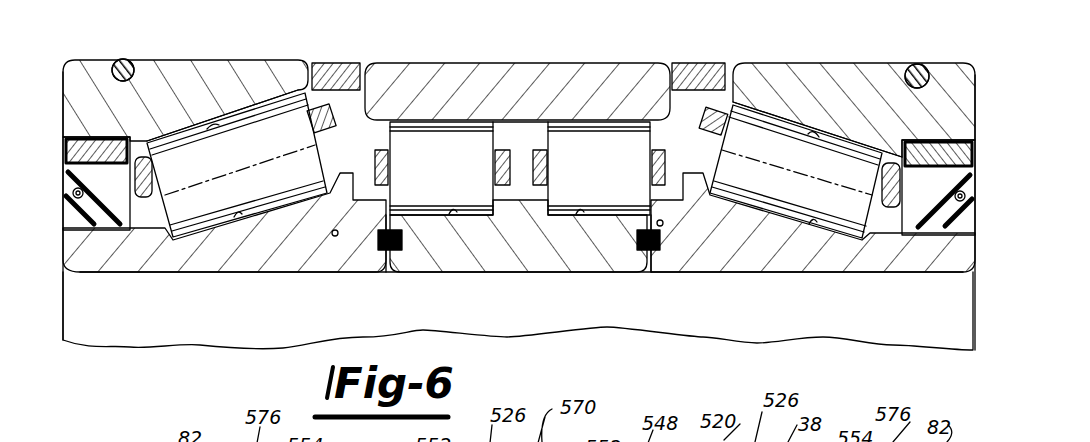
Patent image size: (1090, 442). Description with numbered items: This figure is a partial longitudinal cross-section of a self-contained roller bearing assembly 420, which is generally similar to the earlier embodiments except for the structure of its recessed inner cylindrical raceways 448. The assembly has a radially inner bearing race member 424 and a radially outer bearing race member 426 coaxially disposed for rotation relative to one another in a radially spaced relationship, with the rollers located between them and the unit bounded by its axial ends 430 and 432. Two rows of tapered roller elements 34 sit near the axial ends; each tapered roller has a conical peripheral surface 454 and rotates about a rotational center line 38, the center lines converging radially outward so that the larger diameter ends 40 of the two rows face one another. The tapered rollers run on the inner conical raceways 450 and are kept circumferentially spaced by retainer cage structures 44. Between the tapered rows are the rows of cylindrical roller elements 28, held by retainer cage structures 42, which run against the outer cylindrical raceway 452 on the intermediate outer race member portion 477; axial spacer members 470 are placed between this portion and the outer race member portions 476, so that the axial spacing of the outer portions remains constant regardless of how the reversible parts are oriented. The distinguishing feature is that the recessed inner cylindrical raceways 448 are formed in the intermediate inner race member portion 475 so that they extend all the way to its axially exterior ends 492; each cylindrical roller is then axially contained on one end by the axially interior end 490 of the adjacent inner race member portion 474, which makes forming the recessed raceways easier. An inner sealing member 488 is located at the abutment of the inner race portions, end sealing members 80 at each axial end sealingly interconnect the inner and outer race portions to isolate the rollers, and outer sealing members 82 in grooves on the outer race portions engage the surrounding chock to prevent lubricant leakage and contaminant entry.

The cylindrical roller elements 28 is at (442, 143).
The tapered roller elements 34 is at (283, 77).
The rotational center lines 38 is at (173, 186).
The larger diameter ends 40 is at (340, 138).
The retainer cage structure 42 is at (653, 143).
The retainer cage structure 44 is at (147, 197).
The end sealing members 80 is at (90, 215).
The outer sealing member 82 is at (123, 59).
The bearing assembly 420 is at (668, 43).
The inner ring assembly 424 is at (312, 279).
The outer ring 426 is at (232, 13).
The left end ring 430 is at (61, 260).
The right end ring 432 is at (976, 266).
The recessed inner cylindrical raceways 448 is at (453, 213).
The roller lip 450 is at (237, 216).
The spacer 452 is at (525, 130).
The lubrication recess 454 is at (213, 125).
The cage segment 470 is at (340, 118).
The inner race member portions 474 is at (193, 263).
The inner race member portion 475 is at (537, 258).
The spacer ring 476 is at (343, 88).
The center outer ring 477 is at (420, 77).
The retaining clip 488 is at (395, 252).
The axially interior end 490 is at (412, 192).
The axially exterior ends 492 is at (335, 236).